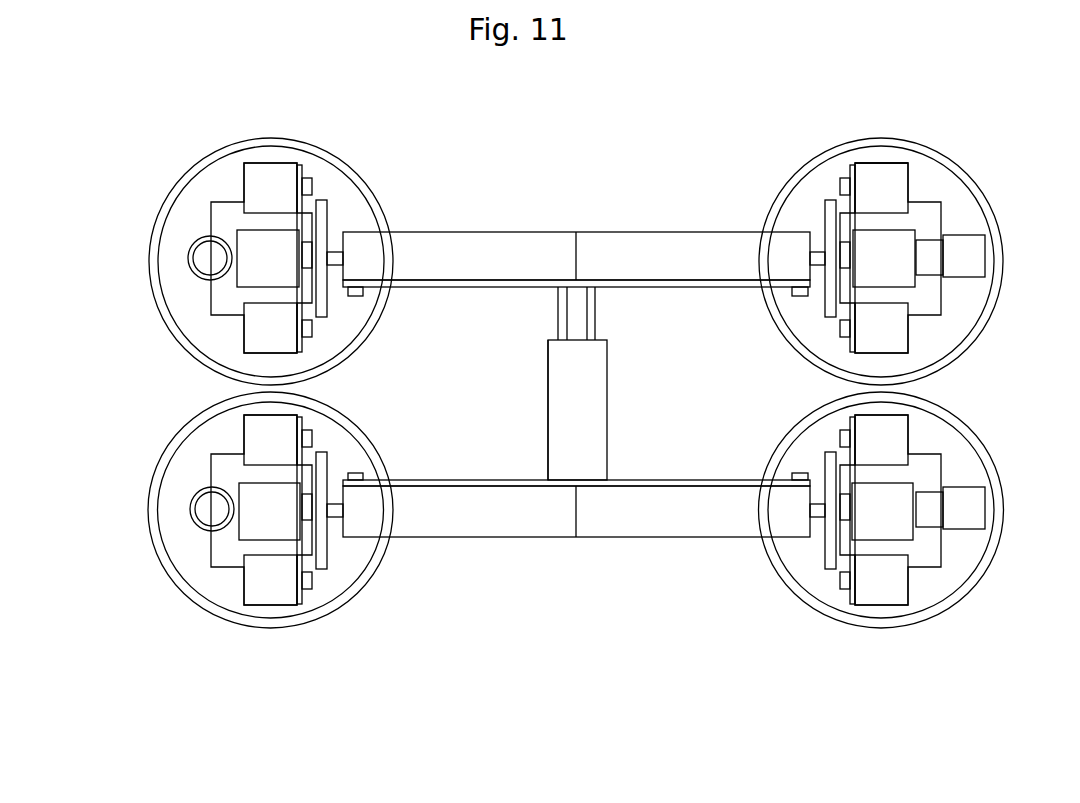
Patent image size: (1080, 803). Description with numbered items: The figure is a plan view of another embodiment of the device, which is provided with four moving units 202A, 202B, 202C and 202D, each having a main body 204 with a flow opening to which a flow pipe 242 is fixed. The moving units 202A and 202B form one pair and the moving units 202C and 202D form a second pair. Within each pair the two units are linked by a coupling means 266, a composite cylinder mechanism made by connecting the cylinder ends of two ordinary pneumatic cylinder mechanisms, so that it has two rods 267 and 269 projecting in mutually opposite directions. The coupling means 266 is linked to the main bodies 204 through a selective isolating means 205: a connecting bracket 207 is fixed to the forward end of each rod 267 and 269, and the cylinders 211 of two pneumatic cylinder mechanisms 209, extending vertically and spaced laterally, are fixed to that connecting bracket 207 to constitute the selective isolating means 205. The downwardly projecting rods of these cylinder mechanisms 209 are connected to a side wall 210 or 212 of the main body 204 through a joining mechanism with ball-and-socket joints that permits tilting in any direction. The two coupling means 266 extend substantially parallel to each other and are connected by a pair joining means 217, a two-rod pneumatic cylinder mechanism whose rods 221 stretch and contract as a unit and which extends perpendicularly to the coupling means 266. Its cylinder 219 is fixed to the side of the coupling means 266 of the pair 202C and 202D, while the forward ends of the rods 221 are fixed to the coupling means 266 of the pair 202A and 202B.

The moving unit 202A is at (315, 122).
The moving unit 202B is at (908, 120).
The moving unit 202C is at (270, 645).
The moving unit 202D is at (868, 645).
The main body 204 is at (218, 192).
The selective isolating means 205 is at (249, 154).
The connecting bracket 207 is at (320, 294).
The pneumatic cylinder mechanism 209 is at (278, 160).
The side wall 210 is at (240, 314).
The cylinder 211 is at (298, 162).
The side wall 212 is at (231, 202).
The pair joining means 217 is at (615, 412).
The cylinder 219 is at (548, 430).
The rods 221 is at (590, 327).
The flow pipe 242 is at (188, 260).
The coupling means 266 is at (568, 224).
The rod 267 is at (342, 253).
The rod 269 is at (868, 151).